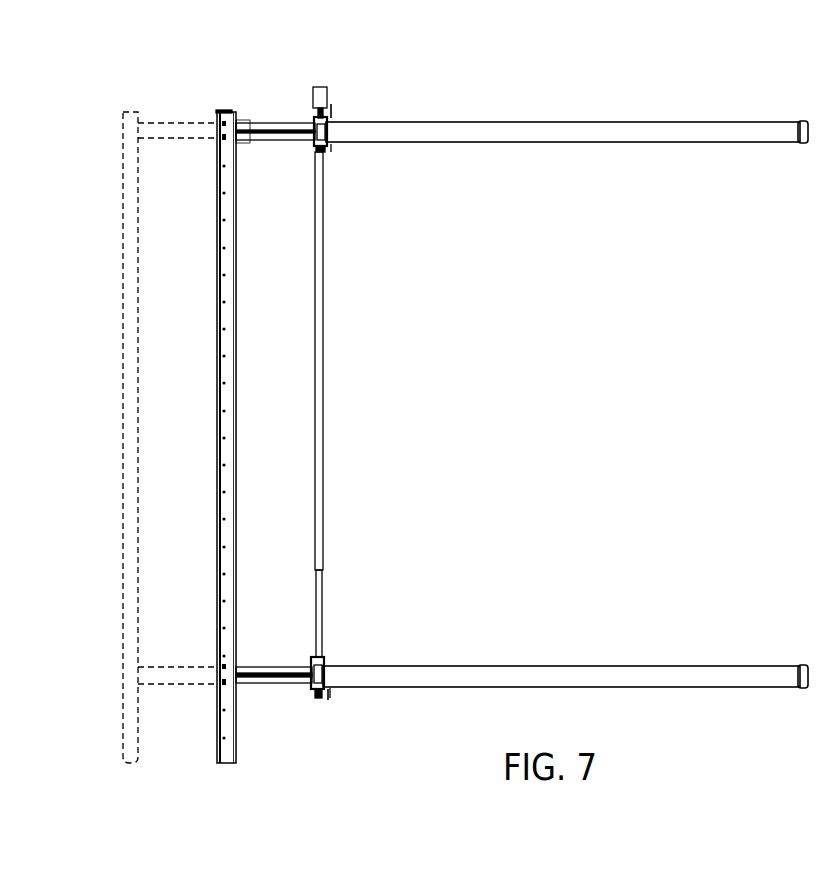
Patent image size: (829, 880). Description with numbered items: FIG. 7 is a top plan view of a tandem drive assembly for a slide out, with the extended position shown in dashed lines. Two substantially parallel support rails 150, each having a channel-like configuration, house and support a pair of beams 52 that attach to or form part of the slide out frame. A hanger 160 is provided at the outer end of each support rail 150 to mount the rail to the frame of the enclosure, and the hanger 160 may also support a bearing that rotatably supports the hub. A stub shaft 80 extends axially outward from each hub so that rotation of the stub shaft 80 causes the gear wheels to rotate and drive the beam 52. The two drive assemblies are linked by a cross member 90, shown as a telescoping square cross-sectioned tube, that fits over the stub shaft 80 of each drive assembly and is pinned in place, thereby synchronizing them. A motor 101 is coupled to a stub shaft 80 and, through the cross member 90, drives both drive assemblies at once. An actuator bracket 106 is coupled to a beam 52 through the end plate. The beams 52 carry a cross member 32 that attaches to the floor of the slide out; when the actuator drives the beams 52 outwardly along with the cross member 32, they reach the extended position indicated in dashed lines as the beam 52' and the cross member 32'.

The cross member 32 is at (253, 436).
The cross member in extended position 32' is at (157, 437).
The beam 52 is at (275, 385).
The beam in extended position 52' is at (177, 377).
The actuator bracket 106 is at (247, 147).
The motor 101 is at (319, 86).
The stub shaft 80 is at (324, 151).
The support rail 150 is at (514, 133).
The hanger 160 is at (332, 106).
The cross member 90 is at (318, 458).